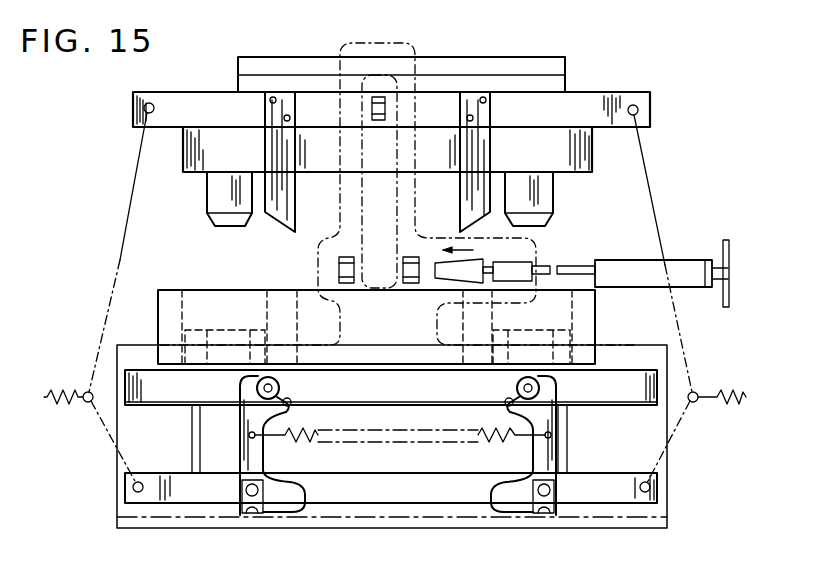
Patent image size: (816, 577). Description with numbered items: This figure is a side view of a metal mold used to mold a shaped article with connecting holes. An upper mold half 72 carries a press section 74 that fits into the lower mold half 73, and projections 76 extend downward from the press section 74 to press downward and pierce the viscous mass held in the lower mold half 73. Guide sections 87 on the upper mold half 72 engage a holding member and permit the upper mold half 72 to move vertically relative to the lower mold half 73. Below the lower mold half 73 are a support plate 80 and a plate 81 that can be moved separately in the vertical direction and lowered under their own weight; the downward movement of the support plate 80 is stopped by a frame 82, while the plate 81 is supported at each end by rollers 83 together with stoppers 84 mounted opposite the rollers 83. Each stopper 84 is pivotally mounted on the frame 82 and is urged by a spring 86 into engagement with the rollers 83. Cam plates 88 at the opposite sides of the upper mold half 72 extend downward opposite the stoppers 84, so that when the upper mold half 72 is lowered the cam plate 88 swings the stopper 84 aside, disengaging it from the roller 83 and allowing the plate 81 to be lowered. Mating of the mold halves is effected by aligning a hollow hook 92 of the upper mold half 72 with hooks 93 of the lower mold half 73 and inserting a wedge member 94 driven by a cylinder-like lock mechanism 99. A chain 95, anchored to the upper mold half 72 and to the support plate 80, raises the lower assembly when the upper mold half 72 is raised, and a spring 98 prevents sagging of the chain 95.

The upper mold half 72 is at (207, 100).
The lower mold half 73 is at (173, 292).
The press section 74 is at (183, 158).
The projections 76 is at (207, 205).
The support plate 80 is at (363, 482).
The plate 81 is at (388, 374).
The frame 82 is at (408, 56).
The rollers 83 is at (280, 388).
The stoppers 84 is at (240, 430).
The spring 86 is at (407, 440).
The guide sections 87 is at (289, 66).
The cam plates 88 is at (272, 214).
The hollow hook 92 is at (386, 108).
The hooks 93 is at (339, 272).
The wedge member 94 is at (438, 270).
The chain 95 is at (111, 256).
The spring 98 is at (56, 392).
The cylinder-like lock mechanism 99 is at (692, 260).